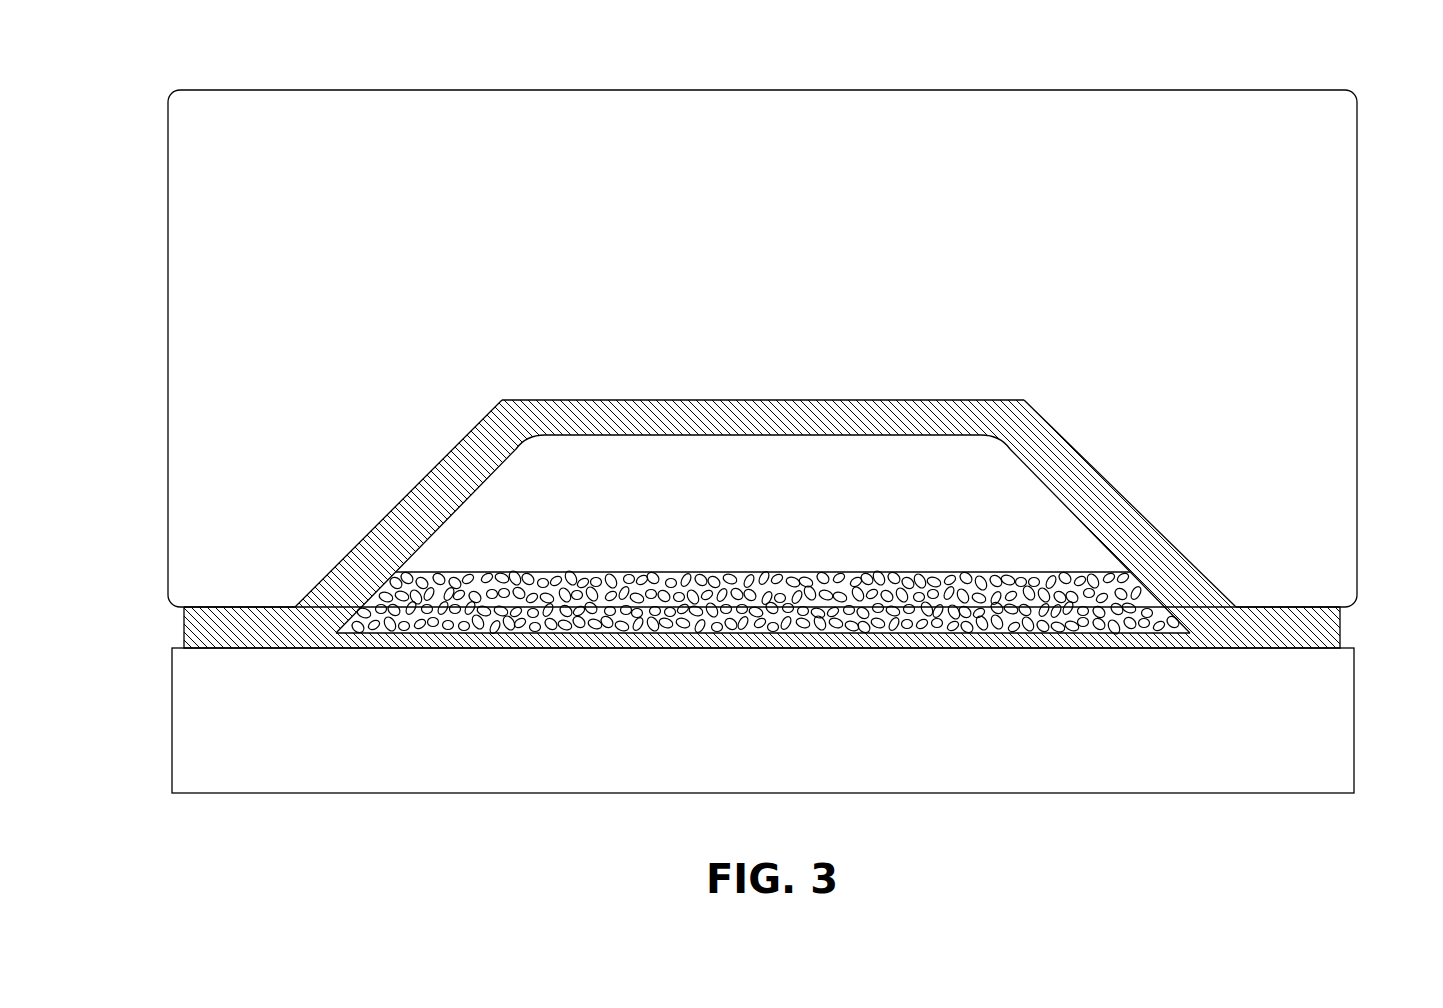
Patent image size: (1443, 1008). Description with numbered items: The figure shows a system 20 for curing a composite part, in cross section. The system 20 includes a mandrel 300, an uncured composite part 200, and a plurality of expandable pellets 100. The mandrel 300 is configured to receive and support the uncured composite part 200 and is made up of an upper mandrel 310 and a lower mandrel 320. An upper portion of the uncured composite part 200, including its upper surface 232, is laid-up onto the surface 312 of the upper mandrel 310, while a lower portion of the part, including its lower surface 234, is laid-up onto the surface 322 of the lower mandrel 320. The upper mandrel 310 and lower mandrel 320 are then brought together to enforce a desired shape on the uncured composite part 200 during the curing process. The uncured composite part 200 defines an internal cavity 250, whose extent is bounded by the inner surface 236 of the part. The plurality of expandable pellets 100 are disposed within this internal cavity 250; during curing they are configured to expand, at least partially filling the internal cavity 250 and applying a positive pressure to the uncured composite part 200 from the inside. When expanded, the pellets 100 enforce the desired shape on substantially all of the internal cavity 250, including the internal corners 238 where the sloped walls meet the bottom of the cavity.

The system 20 is at (1143, 60).
The expandable pellets 100 is at (938, 598).
The uncured composite part 200 is at (1312, 628).
The upper surface 232 is at (882, 407).
The lower surface 234 is at (1246, 635).
The inner surface 236 is at (775, 440).
The internal corners 238 is at (448, 640).
The internal cavity 250 is at (536, 493).
The mandrel 300 is at (170, 710).
The upper mandrel 310 is at (782, 181).
The surface of upper mandrel 312 is at (634, 393).
The lower mandrel 320 is at (782, 783).
The surface of lower mandrel 322 is at (878, 652).